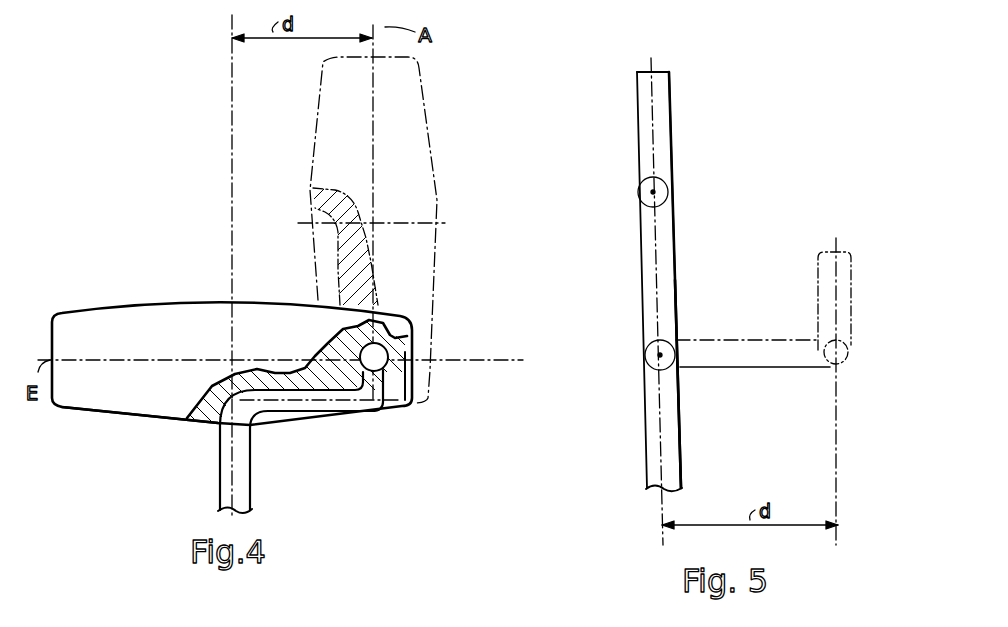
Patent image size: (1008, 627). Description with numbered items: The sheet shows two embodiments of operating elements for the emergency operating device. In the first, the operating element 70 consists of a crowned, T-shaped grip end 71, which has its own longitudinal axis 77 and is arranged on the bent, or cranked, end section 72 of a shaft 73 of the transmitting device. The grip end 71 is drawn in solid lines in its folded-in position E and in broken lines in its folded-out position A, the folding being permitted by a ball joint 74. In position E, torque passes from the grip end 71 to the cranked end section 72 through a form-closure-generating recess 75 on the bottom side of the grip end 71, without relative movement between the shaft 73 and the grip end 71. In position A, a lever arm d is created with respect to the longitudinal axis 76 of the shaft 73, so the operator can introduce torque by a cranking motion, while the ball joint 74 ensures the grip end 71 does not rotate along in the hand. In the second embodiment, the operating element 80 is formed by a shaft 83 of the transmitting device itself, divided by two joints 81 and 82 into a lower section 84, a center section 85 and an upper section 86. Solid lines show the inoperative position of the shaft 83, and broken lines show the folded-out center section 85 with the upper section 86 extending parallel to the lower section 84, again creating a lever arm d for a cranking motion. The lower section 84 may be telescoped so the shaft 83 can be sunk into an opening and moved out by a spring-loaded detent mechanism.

In FIG. 4, the operating element 70 is at (96, 432).
In FIG. 4, the grip end 71 is at (413, 145).
In FIG. 4, the bent end section 72 is at (352, 408).
In FIG. 4, the shaft 73 is at (248, 486).
In FIG. 4, the ball joint 74 is at (388, 350).
In FIG. 4, the form-closure-generating recess 75 is at (310, 253).
In FIG. 4, the longitudinal axis of the shaft 76 is at (230, 269).
In FIG. 4, the longitudinal axis of the grip end 77 is at (372, 112).
In FIG. 5, the operating element 80 is at (797, 126).
In FIG. 5, the joint 81 is at (670, 192).
In FIG. 5, the joint 82 is at (668, 360).
In FIG. 5, the shaft 83 is at (626, 504).
In FIG. 5, the lower section 84 is at (676, 445).
In FIG. 5, the center section 85 is at (672, 264).
In FIG. 5, the upper section 86 is at (662, 108).